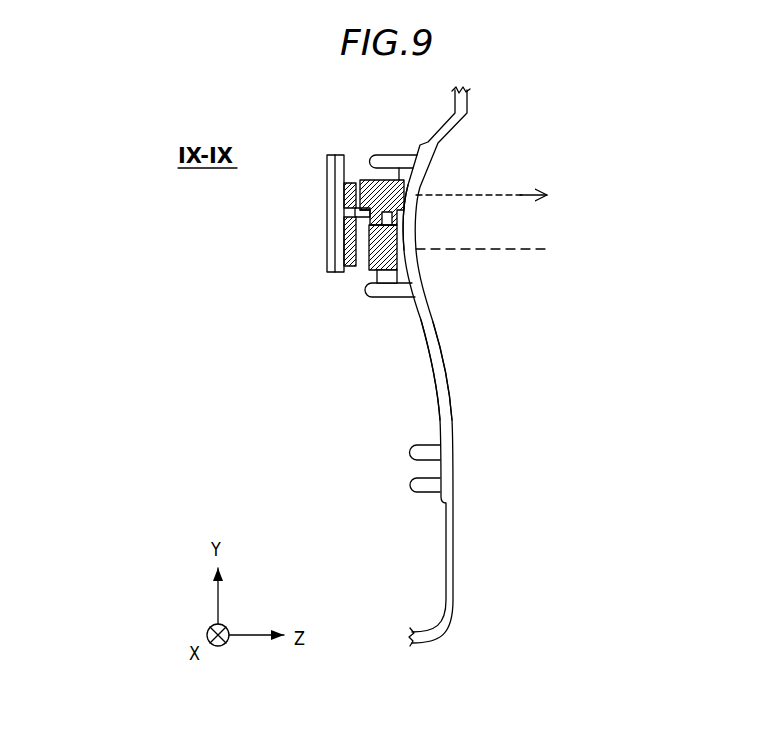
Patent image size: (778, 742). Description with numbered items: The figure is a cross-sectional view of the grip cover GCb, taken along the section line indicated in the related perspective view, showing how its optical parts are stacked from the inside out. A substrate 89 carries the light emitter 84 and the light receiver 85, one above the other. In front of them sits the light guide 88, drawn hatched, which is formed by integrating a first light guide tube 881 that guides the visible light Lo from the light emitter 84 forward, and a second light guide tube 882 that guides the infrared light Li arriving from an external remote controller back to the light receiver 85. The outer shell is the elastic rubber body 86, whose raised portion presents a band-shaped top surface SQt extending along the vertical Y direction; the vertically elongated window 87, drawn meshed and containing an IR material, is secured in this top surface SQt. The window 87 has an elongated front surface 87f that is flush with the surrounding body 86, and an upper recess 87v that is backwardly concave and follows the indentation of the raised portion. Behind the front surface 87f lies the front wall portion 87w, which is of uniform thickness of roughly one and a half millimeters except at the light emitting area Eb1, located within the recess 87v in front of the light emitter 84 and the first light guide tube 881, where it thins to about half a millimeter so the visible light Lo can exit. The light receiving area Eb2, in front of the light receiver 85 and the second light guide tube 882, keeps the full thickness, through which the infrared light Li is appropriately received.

The light emitter 84 is at (350, 183).
The light receiver 85 is at (350, 266).
The body 86 is at (470, 92).
The window 87 is at (453, 424).
The front surface 87f is at (449, 382).
The recess 87v is at (479, 233).
The front wall portion 87w is at (440, 412).
The light guide 88 is at (368, 250).
The light guide tube (first light guide) 881 is at (391, 180).
The light guide tube (second light guide) 882 is at (399, 297).
The substrate 89 is at (327, 212).
The light emitting area Eb1 is at (441, 178).
The light receiving area Eb2 is at (421, 260).
The visible light Lo is at (517, 197).
The infrared light Li is at (517, 250).
The top surface SQt is at (473, 343).
The grip cover GCb is at (352, 386).